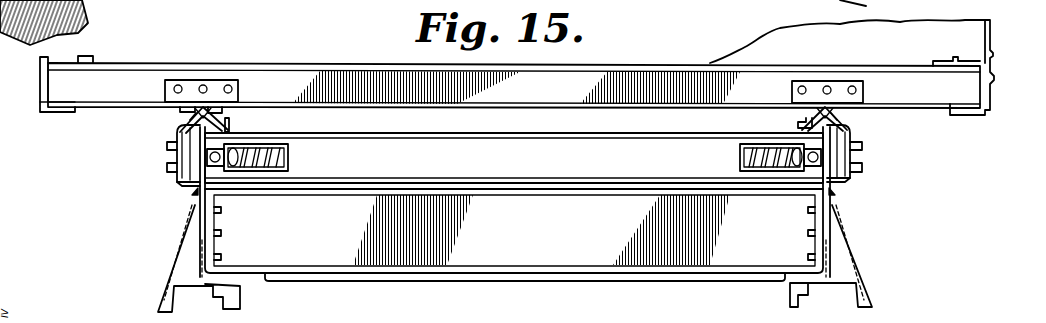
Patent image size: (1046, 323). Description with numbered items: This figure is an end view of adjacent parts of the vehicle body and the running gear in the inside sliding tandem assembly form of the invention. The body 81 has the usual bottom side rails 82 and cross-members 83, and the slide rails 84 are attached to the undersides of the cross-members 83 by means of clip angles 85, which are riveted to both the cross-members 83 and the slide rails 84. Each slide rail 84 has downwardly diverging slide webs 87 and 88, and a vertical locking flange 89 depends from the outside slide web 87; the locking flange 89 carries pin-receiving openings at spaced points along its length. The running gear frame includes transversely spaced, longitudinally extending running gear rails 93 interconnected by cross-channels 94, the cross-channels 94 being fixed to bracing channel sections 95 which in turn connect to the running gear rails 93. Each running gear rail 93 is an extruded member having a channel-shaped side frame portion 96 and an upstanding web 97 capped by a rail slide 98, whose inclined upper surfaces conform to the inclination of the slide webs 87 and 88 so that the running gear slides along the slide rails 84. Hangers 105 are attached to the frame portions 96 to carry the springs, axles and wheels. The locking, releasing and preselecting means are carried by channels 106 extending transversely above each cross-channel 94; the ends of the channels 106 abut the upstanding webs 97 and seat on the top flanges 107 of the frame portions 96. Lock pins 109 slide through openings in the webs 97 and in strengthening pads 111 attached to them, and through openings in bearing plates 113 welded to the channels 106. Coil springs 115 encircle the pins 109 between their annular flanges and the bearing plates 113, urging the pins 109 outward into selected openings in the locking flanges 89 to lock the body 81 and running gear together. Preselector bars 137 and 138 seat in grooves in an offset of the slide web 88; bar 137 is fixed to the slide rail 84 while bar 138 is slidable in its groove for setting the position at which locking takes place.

The body 81 is at (760, 52).
The bottom side rail 82 is at (43, 93).
The cross-member 83 is at (342, 72).
The slide rail 84 is at (218, 110).
The clip angle 85 is at (215, 82).
The outside slide web 87 is at (182, 125).
The inside slide web 88 is at (810, 115).
The vertical locking flange 89 is at (173, 162).
The running gear rail 93 is at (195, 190).
The cross-channel 94 is at (530, 230).
The bracing channel section 95 is at (273, 277).
The channel-shaped side frame portion 96 is at (213, 223).
The upstanding web 97 is at (190, 178).
The rail slide 98 is at (190, 118).
The hanger 105 is at (173, 272).
The channel 106 is at (408, 147).
The top flange 107 is at (786, 177).
The lock pin 109 is at (262, 168).
The strengthening pad 111 is at (177, 150).
The bearing plate 113 is at (287, 150).
The coil spring 115 is at (240, 168).
The preselector bar 137 is at (233, 110).
The preselector bar 138 is at (230, 122).